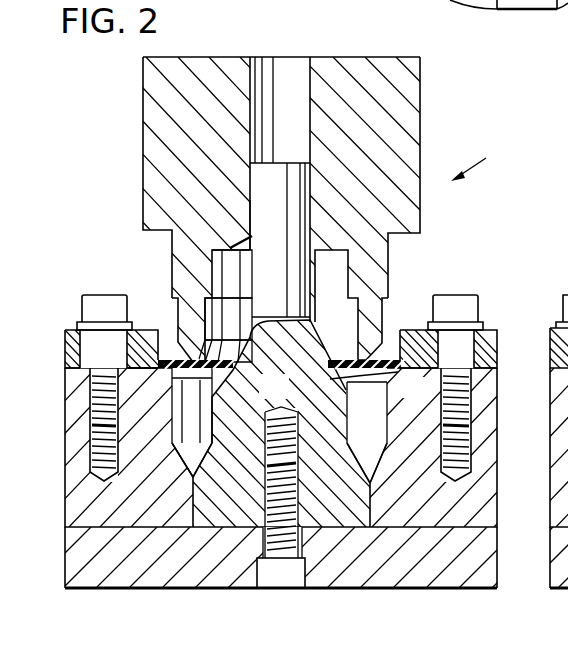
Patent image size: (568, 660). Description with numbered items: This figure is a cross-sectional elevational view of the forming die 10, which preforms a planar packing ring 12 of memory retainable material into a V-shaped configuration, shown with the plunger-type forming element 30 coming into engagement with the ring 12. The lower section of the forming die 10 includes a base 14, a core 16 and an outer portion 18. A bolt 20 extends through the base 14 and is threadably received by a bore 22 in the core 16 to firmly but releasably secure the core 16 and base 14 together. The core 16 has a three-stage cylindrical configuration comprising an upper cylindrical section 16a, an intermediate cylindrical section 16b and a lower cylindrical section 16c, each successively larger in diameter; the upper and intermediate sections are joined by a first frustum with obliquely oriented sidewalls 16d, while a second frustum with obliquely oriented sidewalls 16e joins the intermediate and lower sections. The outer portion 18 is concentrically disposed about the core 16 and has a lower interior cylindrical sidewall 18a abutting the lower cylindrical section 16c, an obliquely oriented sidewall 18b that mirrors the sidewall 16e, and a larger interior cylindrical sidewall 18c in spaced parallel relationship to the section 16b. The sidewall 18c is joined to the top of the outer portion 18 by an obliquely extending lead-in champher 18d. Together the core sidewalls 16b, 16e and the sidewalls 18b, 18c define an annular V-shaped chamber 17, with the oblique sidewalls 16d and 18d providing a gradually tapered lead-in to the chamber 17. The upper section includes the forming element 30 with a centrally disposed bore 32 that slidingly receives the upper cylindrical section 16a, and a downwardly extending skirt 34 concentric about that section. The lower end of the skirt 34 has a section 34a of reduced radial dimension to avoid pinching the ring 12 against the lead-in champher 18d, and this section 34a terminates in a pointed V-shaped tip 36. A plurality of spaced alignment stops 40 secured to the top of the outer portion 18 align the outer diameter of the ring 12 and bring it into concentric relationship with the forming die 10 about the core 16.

The forming die 10 is at (483, 164).
The packing ring 12 is at (390, 360).
The base 14 is at (388, 580).
The core 16 is at (285, 397).
The upper cylindrical section 16a is at (250, 219).
The intermediate cylindrical section 16b is at (338, 384).
The lower cylindrical section 16c is at (300, 588).
The obliquely oriented sidewalls of first frustum 16d is at (388, 374).
The obliquely oriented sidewalls of second frustum 16e is at (358, 456).
The annular V-shaped chamber 17 is at (193, 404).
The outer portion 18 is at (120, 496).
The lower interior cylindrical sidewall 18a is at (130, 588).
The obliquely oriented sidewall 18b is at (177, 458).
The interior cylindrical sidewall 18c is at (391, 440).
The lead-in champher 18d is at (132, 378).
The bolt 20 is at (287, 548).
The bore 22 is at (196, 587).
The forming element 30 is at (408, 88).
The bore 32 is at (303, 73).
The skirt 34 is at (172, 275).
The section of reduced radial dimension 34a is at (207, 312).
The pointed V-shaped tip 36 is at (355, 350).
The alignment stops 40 is at (67, 338).